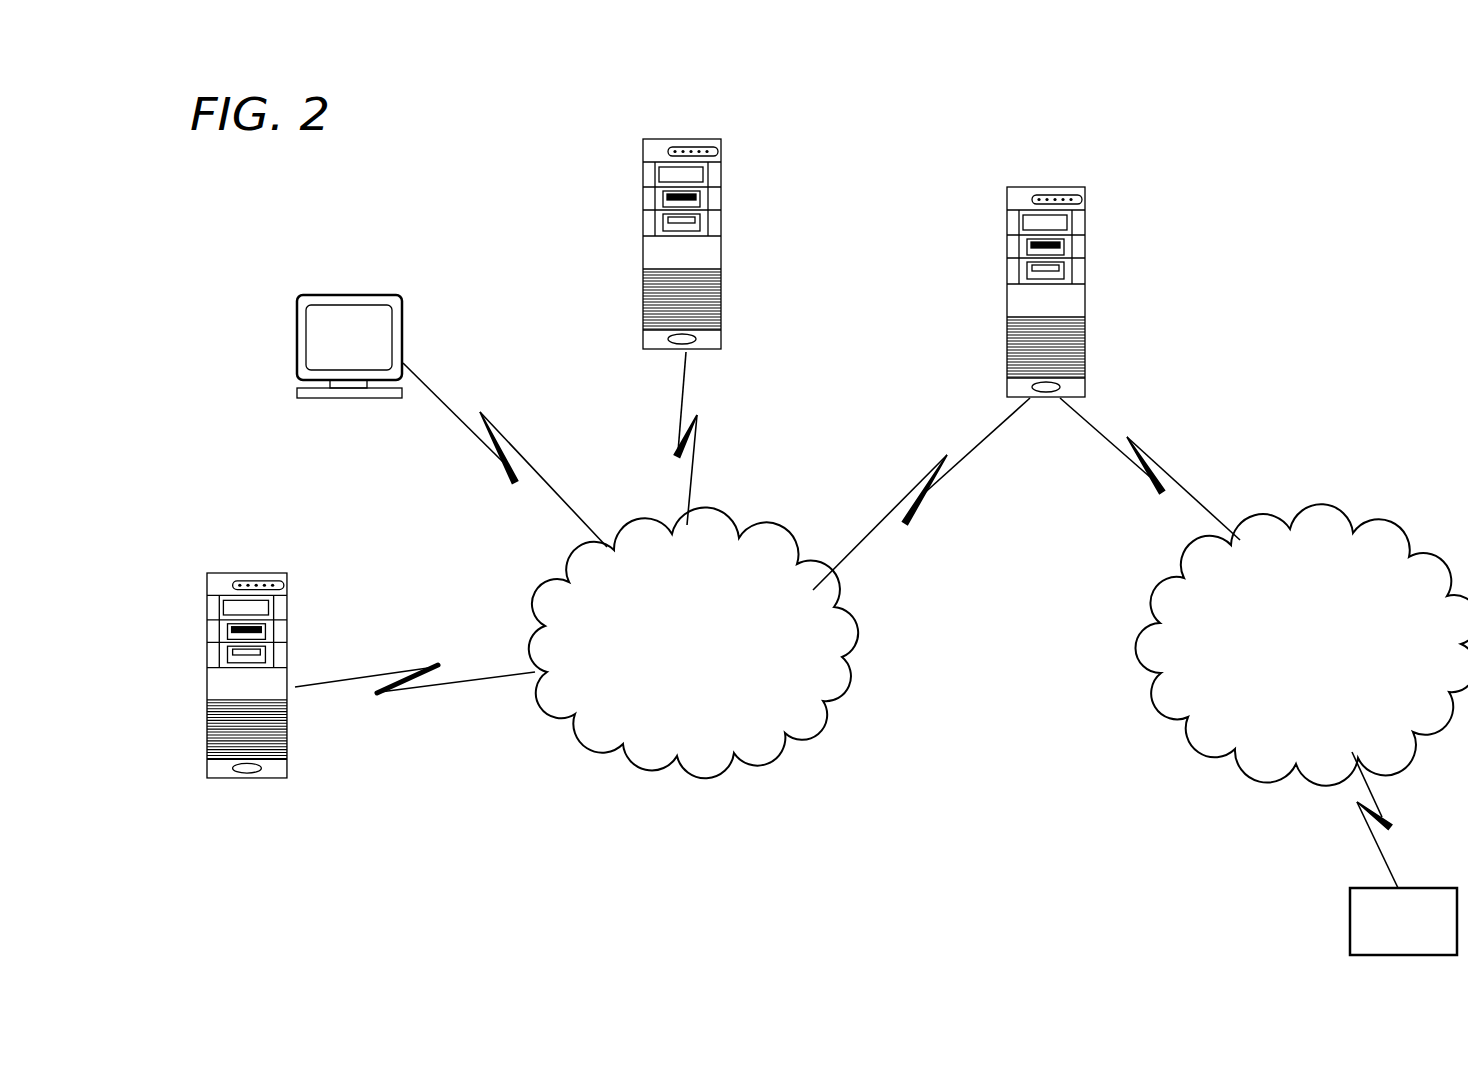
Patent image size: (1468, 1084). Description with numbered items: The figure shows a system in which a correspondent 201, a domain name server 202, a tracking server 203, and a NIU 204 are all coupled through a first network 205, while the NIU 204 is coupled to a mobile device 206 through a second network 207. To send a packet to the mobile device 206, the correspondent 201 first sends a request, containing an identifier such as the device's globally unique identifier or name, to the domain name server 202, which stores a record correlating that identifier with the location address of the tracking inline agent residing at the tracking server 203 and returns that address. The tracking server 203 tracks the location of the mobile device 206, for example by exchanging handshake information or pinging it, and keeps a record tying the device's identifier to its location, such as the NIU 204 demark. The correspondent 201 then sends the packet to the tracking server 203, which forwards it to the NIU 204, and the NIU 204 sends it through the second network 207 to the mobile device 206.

The correspondent 201 is at (297, 333).
The domain name server 202 is at (643, 177).
The tracking server 203 is at (207, 663).
The NIU 204 is at (1007, 218).
The first network 205 is at (689, 762).
The mobile device 206 is at (1350, 918).
The second network 207 is at (1182, 720).